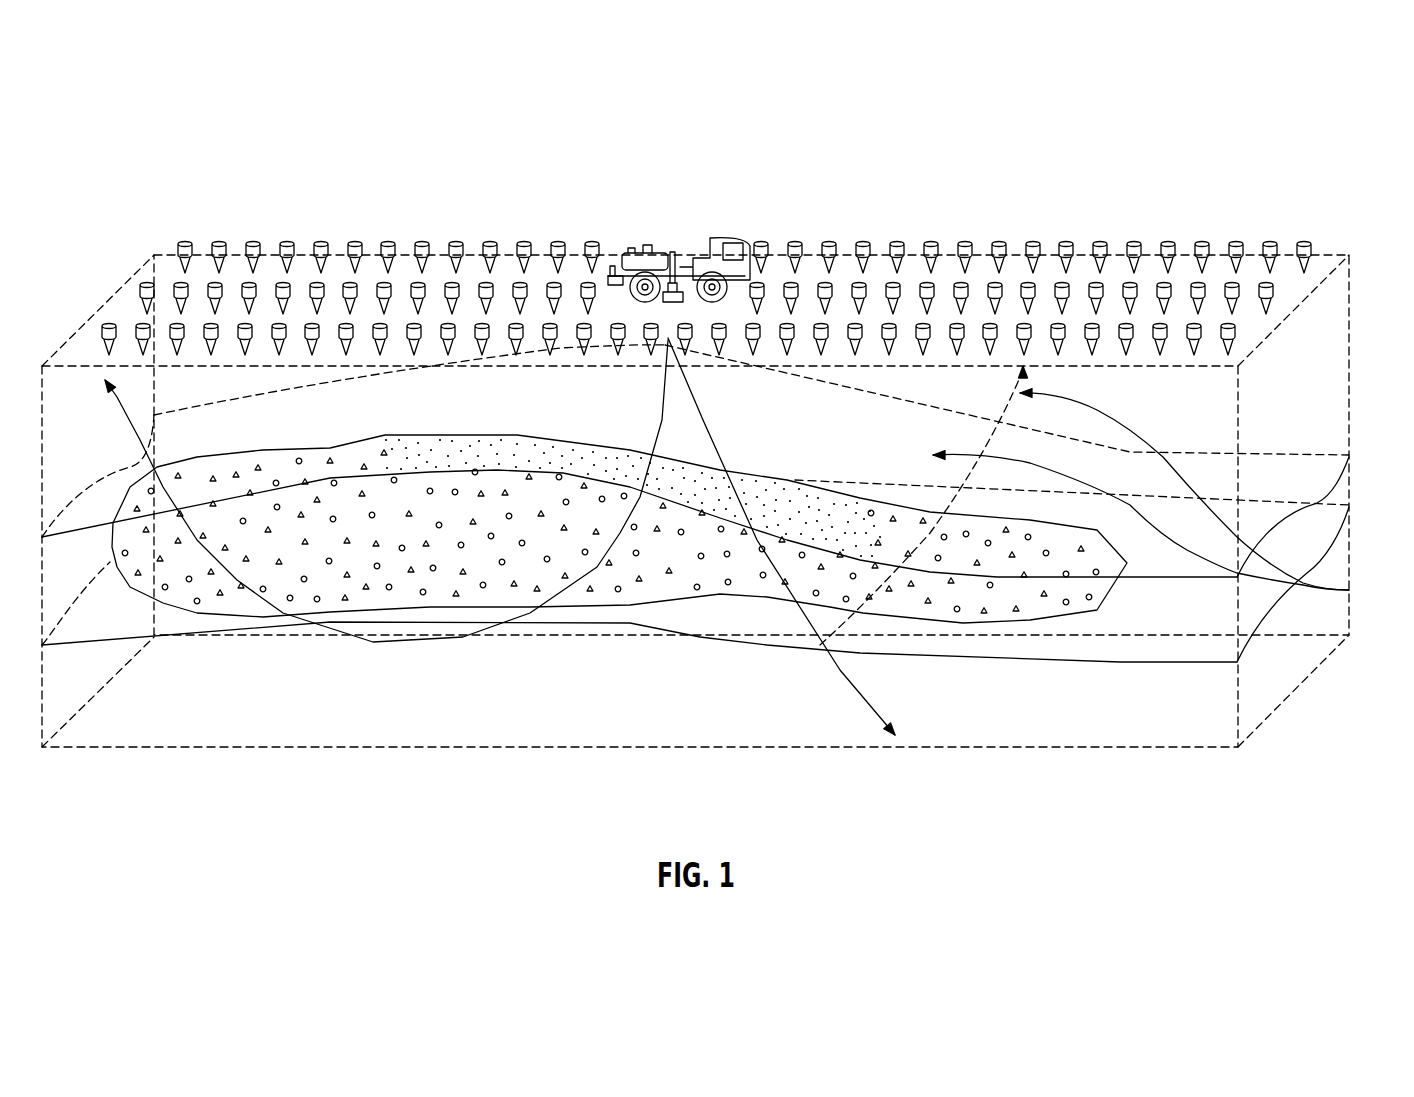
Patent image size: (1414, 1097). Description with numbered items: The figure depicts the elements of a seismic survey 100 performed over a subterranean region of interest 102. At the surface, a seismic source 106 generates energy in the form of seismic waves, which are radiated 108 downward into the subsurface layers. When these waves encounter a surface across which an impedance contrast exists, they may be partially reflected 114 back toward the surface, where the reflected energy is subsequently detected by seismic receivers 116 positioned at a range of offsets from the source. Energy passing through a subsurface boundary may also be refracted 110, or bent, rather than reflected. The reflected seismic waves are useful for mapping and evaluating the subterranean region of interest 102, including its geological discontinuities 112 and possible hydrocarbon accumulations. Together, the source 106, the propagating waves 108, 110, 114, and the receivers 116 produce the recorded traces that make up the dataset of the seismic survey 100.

The seismic survey 100 is at (1310, 148).
The subterranean region of interest 102 is at (1115, 750).
The seismic source 106 is at (683, 243).
The radiated seismic waves 108 is at (858, 693).
The refracted seismic waves 110 is at (262, 598).
The geological discontinuities 112 is at (70, 537).
The reflected seismic waves 114 is at (1349, 590).
The seismic receiver 116 is at (1035, 243).